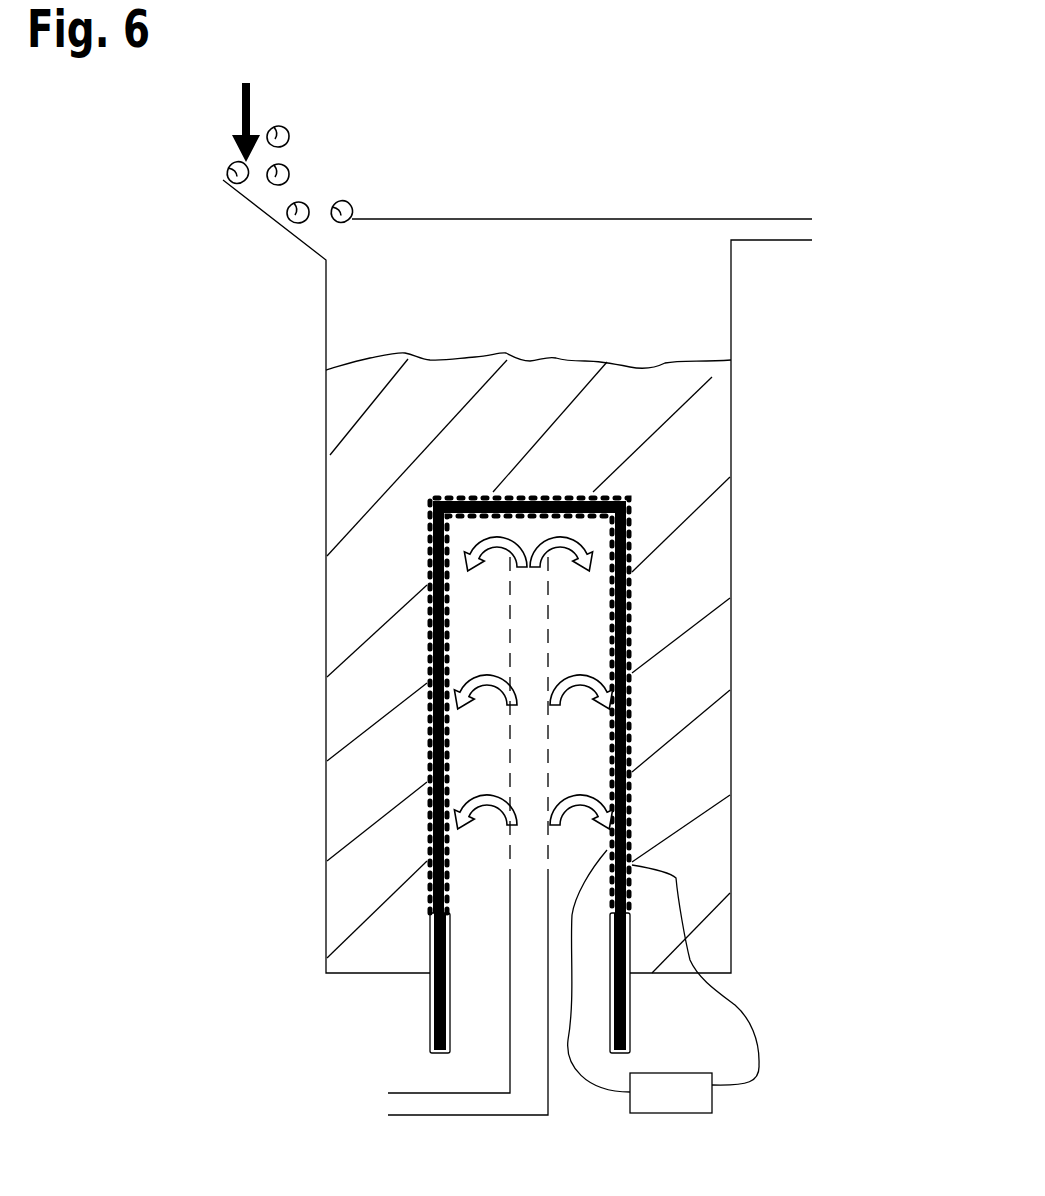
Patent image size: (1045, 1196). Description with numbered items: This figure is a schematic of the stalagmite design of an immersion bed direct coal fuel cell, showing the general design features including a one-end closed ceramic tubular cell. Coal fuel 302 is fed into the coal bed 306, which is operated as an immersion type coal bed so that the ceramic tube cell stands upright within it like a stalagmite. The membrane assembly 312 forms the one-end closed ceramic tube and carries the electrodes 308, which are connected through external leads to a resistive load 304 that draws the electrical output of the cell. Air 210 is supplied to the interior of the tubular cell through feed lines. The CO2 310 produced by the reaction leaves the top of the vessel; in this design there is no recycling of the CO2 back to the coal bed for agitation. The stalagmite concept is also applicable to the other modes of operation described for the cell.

The coal fuel 302 is at (333, 203).
The CO2 310 is at (830, 219).
The coal bed 306 is at (681, 485).
The electrodes 308 is at (647, 713).
The membrane assembly 312 is at (418, 1013).
The air 210 is at (358, 1095).
The resistive load 304 is at (666, 1010).